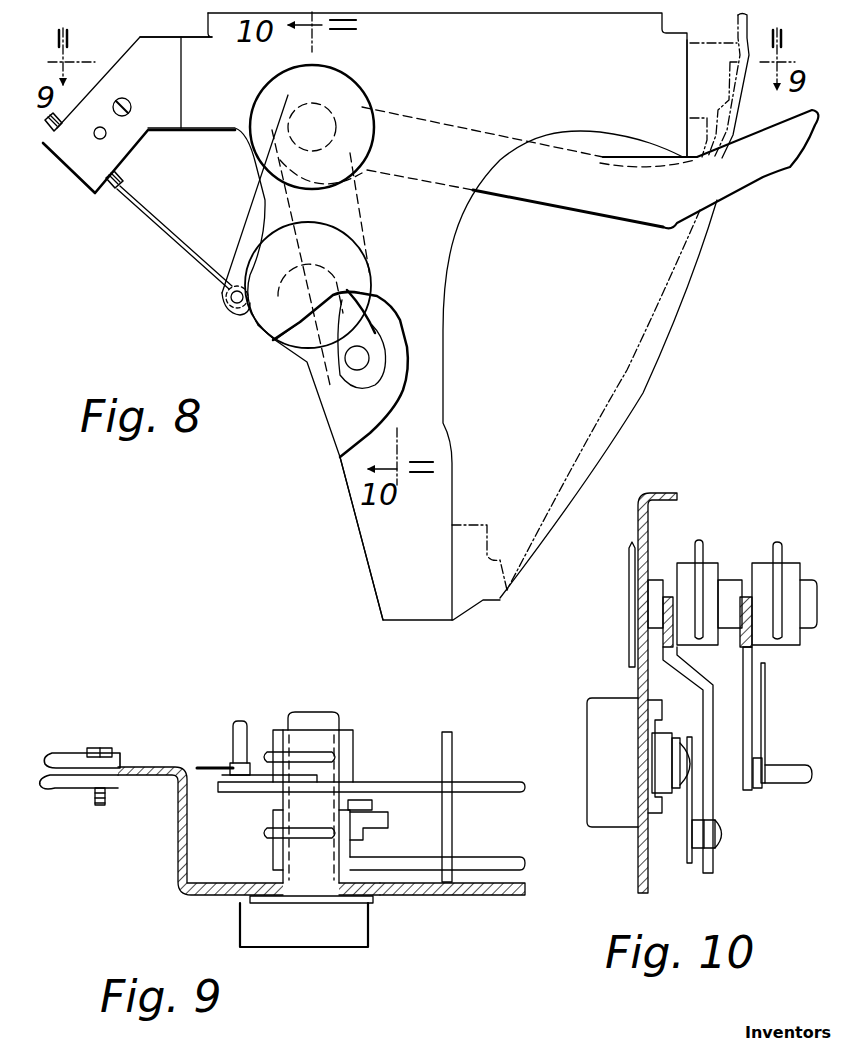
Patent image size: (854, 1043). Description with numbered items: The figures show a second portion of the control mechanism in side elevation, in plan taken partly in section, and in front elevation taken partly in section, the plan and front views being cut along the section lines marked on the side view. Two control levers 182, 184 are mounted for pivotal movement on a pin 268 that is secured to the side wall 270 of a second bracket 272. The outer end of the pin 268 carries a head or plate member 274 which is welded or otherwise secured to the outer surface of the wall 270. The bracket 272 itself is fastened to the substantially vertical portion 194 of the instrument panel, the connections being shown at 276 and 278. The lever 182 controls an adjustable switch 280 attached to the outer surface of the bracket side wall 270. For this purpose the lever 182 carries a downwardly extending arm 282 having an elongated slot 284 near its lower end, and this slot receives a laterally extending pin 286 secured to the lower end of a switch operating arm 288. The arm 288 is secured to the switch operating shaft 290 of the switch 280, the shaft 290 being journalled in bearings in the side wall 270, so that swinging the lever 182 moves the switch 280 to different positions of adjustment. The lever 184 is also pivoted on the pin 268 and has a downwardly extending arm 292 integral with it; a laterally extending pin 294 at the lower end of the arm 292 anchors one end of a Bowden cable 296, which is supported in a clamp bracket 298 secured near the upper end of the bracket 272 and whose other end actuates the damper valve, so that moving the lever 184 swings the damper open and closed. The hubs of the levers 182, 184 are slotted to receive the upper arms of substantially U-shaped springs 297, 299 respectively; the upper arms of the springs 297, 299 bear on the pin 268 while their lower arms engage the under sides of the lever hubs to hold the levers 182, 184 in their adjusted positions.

In FIG. 8, the control lever 182 is at (655, 220).
In FIG. 9, the control lever 182 is at (470, 858).
In FIG. 10, the control lever 182 is at (668, 597).
In FIG. 9, the control lever 184 is at (470, 783).
In FIG. 10, the control lever 184 is at (745, 597).
In FIG. 8, the substantially vertical portion of instrument panel 194 is at (682, 315).
In FIG. 9, the pin 268 is at (313, 712).
In FIG. 10, the pin 268 is at (808, 580).
In FIG. 9, the side wall 270 is at (470, 893).
In FIG. 10, the side wall 270 is at (635, 680).
In FIG. 8, the second bracket 272 is at (203, 34).
In FIG. 9, the second bracket 272 is at (176, 888).
In FIG. 10, the second bracket 272 is at (650, 875).
In FIG. 9, the head or plate member 274 is at (290, 900).
In FIG. 8, the connection 276 is at (697, 78).
In FIG. 8, the connection 278 is at (385, 597).
In FIG. 8, the adjustable switch 280 is at (352, 238).
In FIG. 9, the adjustable switch 280 is at (240, 923).
In FIG. 10, the adjustable switch 280 is at (603, 817).
In FIG. 8, the downwardly extending arm 282 is at (378, 314).
In FIG. 10, the downwardly extending arm 282 is at (703, 697).
In FIG. 8, the elongated slot 284 is at (357, 372).
In FIG. 9, the laterally extending pin 286 is at (362, 800).
In FIG. 10, the laterally extending pin 286 is at (725, 834).
In FIG. 8, the switch operating arm 288 is at (312, 369).
In FIG. 9, the switch operating arm 288 is at (372, 838).
In FIG. 10, the switch operating arm 288 is at (690, 805).
In FIG. 10, the switch operating shaft 290 is at (657, 753).
In FIG. 8, the downwardly extending arm 292 is at (250, 210).
In FIG. 10, the downwardly extending arm 292 is at (755, 658).
In FIG. 8, the laterally extending pin 294 is at (223, 308).
In FIG. 9, the laterally extending pin 294 is at (240, 722).
In FIG. 10, the laterally extending pin 294 is at (777, 772).
In FIG. 8, the Bowden cable 296 is at (155, 226).
In FIG. 9, the Bowden cable 296 is at (213, 771).
In FIG. 10, the Bowden cable 296 is at (766, 712).
In FIG. 9, the substantially U-shaped spring 297 is at (267, 838).
In FIG. 10, the substantially U-shaped spring 297 is at (699, 540).
In FIG. 8, the clamp bracket 298 is at (73, 166).
In FIG. 9, the clamp bracket 298 is at (60, 752).
In FIG. 9, the substantially U-shaped spring 299 is at (268, 754).
In FIG. 10, the substantially U-shaped spring 299 is at (777, 542).